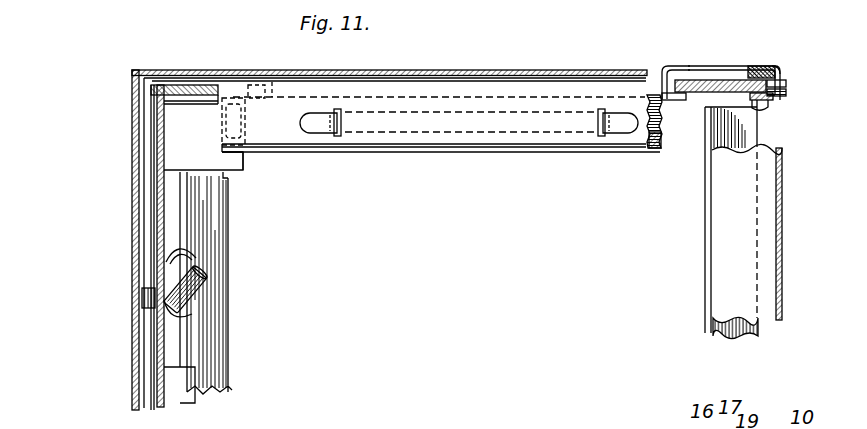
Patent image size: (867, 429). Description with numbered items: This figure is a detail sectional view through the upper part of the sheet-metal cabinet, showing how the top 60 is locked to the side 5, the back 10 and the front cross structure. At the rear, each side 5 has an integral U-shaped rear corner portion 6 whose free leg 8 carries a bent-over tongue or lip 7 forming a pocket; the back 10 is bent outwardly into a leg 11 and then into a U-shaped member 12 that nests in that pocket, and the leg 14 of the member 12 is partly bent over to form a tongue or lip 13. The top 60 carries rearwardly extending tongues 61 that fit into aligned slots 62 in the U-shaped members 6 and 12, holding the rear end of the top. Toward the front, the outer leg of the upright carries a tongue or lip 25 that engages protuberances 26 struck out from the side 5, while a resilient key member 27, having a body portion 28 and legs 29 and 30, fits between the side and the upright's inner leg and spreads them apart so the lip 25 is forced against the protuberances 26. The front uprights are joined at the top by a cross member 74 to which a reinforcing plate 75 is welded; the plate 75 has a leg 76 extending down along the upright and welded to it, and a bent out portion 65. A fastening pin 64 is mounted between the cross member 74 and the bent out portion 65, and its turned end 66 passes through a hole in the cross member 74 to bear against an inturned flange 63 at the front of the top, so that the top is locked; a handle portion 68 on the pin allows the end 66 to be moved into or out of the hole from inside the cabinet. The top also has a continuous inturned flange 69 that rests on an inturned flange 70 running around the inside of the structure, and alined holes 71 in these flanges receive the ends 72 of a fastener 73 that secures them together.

The side 5 is at (193, 100).
The U-shaped rear corner portion 6 is at (757, 67).
The tongue or lip 7 is at (765, 106).
The free leg 8 is at (780, 70).
The back 10 is at (760, 332).
The leg 11 is at (752, 97).
The U-shaped member 12 is at (697, 67).
The tongue or lip 13 is at (675, 103).
The leg 14 is at (666, 70).
The tongue or lip 25 is at (272, 82).
The protuberances 26 is at (254, 85).
The resilient key member 27 is at (246, 157).
The body portion 28 is at (246, 156).
The leg 29 is at (205, 95).
The leg 30 is at (220, 168).
The top 60 is at (133, 101).
The tongues 61 is at (720, 84).
The slots 62 is at (786, 83).
The inturned flange 63 is at (148, 358).
The fastening pin 64 is at (195, 311).
The bent out portion 65 is at (185, 256).
The turned end 66 is at (143, 297).
The handle portion 68 is at (205, 276).
The continuous inturned flange 69 is at (537, 104).
The inturned flange 70 is at (656, 150).
The alined holes 71 is at (345, 123).
The ends 72 is at (320, 127).
The fastener 73 is at (487, 132).
The cross member 74 is at (153, 164).
The reinforcing plate 75 is at (167, 211).
The leg 76 is at (172, 141).